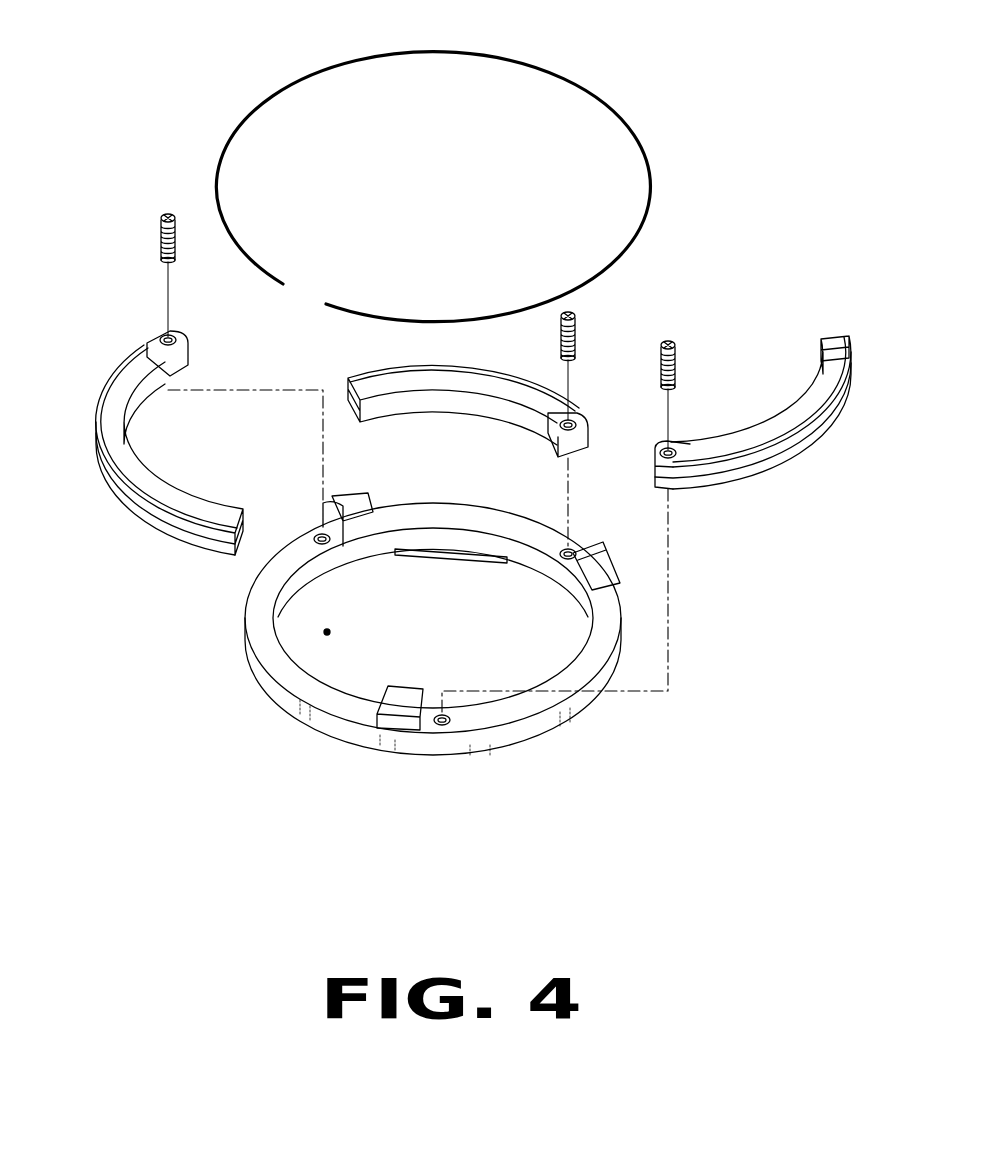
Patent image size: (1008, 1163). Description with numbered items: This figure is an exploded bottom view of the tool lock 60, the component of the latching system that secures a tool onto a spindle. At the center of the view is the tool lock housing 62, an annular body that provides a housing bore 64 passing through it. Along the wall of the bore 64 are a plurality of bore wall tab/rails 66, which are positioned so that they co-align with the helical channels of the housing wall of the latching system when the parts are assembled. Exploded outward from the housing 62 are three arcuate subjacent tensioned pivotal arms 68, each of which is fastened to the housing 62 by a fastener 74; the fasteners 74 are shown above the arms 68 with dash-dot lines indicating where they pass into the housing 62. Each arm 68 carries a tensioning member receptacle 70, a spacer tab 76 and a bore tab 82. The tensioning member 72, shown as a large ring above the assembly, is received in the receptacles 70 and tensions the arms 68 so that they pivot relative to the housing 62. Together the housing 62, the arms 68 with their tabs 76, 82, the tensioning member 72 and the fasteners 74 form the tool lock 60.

The tool lock 60 is at (391, 669).
The tool lock housing 62 is at (395, 748).
The tool lock housing bore 64 is at (327, 632).
The tab/rail of housing bore wall 66 is at (447, 548).
The subjacent tensioned pivotal arm 68 is at (152, 525).
The tensioning member receptacle 70 is at (212, 533).
The tensioning member 72 is at (437, 50).
The fastener 74 is at (166, 212).
The spacer tab 76 is at (102, 380).
The bore tab 82 is at (465, 564).